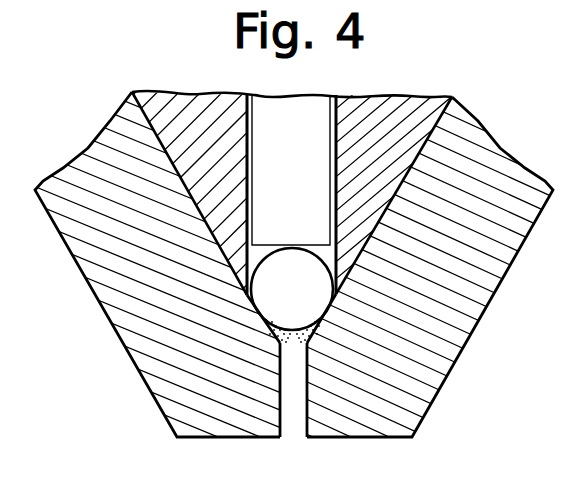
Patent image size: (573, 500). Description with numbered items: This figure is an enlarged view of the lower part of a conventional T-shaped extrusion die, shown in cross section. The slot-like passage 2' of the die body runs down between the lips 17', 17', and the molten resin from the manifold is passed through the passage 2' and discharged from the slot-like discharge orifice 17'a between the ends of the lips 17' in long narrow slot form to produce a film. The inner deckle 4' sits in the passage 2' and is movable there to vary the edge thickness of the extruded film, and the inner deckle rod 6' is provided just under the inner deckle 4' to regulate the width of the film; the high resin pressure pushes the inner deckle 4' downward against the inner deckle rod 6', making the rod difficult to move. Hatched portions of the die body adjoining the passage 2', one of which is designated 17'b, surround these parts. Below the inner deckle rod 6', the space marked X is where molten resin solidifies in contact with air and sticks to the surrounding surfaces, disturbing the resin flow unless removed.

The lips 17' is at (286, 250).
The wedge insert 17'b is at (190, 216).
The discharge orifice 17'a is at (318, 410).
The slot-like passage 2' is at (309, 177).
The inner deckle 4' is at (291, 152).
The inner deckle rod 6' is at (292, 264).
The space X is at (274, 350).